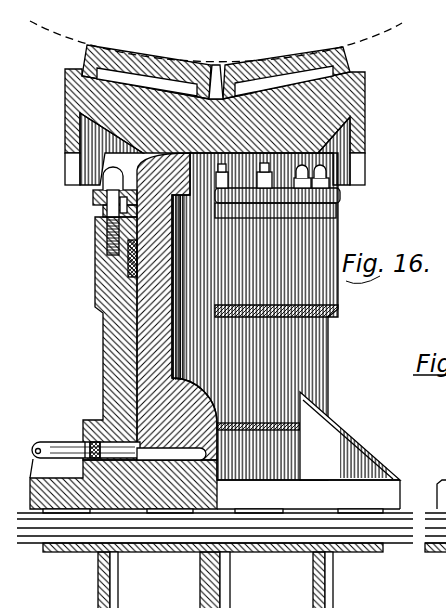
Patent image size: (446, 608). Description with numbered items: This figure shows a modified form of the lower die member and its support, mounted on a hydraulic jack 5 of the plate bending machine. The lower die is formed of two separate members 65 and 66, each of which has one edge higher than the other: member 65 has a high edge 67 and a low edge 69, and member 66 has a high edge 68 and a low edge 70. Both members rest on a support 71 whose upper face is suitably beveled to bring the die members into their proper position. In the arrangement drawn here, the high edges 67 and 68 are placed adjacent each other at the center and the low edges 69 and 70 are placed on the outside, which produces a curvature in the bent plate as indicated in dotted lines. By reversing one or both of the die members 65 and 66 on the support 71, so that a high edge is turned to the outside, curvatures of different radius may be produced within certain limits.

The low edge 70 is at (87, 46).
The die member 66 is at (135, 53).
The high edge 68 is at (210, 63).
The high edge 67 is at (218, 66).
The die member 65 is at (283, 57).
The low edge 69 is at (347, 44).
The support 71 is at (365, 98).
The hydraulic jack 5 is at (327, 348).